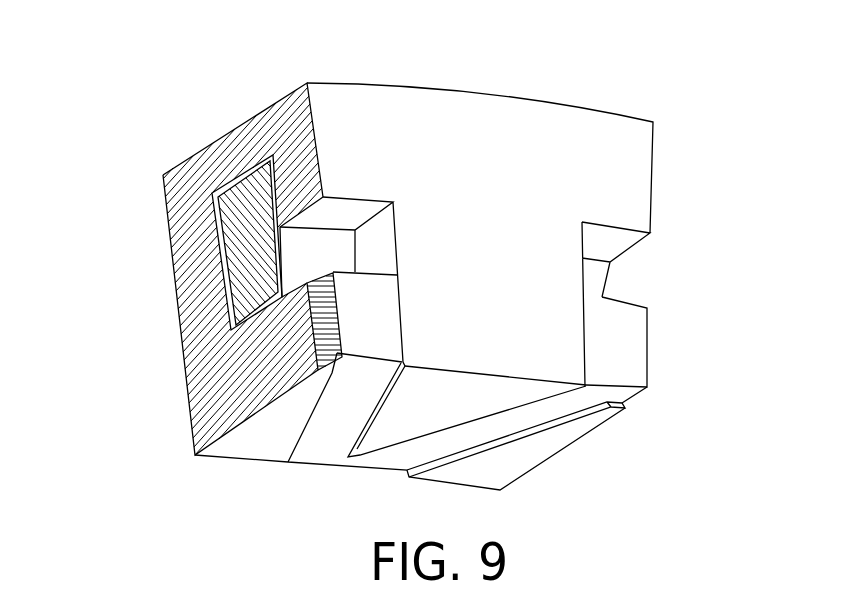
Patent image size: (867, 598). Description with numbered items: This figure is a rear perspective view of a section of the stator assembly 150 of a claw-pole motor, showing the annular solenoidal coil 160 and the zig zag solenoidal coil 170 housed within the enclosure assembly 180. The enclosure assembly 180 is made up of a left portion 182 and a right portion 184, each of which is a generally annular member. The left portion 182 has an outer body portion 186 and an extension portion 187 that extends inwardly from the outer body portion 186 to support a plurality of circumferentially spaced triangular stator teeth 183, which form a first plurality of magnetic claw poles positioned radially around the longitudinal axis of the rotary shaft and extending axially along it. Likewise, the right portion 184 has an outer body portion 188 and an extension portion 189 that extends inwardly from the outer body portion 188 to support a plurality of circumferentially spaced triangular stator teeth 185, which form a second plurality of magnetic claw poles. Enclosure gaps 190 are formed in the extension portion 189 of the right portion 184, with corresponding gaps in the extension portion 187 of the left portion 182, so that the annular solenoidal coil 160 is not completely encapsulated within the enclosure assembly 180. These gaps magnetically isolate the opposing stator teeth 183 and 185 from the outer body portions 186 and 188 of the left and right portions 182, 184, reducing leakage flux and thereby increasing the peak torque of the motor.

The stator assembly 150 is at (368, 50).
The annular solenoidal coil 160 is at (238, 267).
The zig zag solenoidal coil 170 is at (317, 328).
The enclosure assembly 180 is at (622, 107).
The left portion 182 is at (183, 374).
The stator teeth 183 is at (252, 437).
The right portion 184 is at (643, 257).
The stator teeth 185 is at (407, 415).
The outer body portion 186 is at (178, 187).
The extension portion 187 is at (198, 316).
The outer body portion 188 is at (633, 142).
The extension portion 189 is at (477, 235).
The enclosure gaps 190 is at (303, 247).